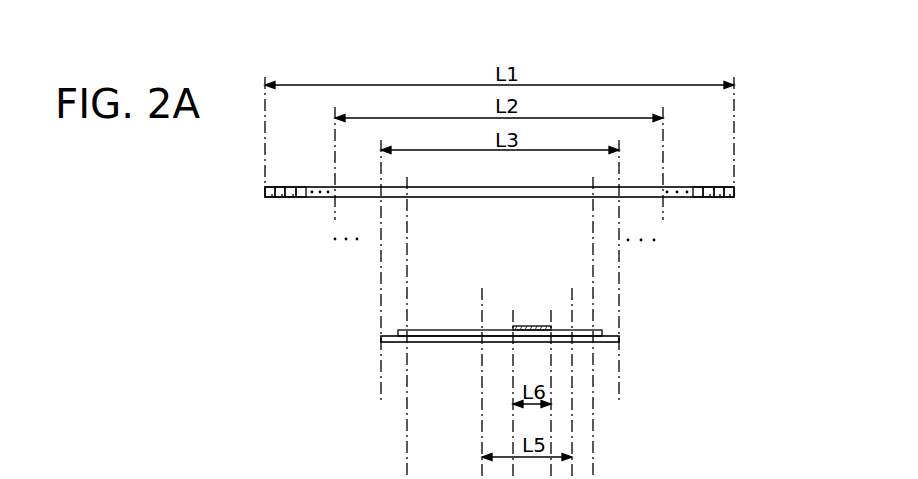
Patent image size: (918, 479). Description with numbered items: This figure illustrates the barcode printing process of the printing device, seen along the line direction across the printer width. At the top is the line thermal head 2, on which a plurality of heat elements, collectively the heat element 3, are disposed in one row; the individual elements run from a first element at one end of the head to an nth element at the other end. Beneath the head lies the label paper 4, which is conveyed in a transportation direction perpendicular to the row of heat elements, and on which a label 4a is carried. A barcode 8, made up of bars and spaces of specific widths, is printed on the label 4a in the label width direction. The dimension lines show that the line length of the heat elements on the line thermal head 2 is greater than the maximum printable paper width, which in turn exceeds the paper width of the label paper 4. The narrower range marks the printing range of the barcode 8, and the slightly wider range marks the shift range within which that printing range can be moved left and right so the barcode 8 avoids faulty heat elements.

The line thermal head 2 is at (258, 192).
The heat element 3 is at (477, 234).
The label paper 4 is at (355, 340).
The label 4a is at (422, 328).
The barcode 8 is at (528, 316).